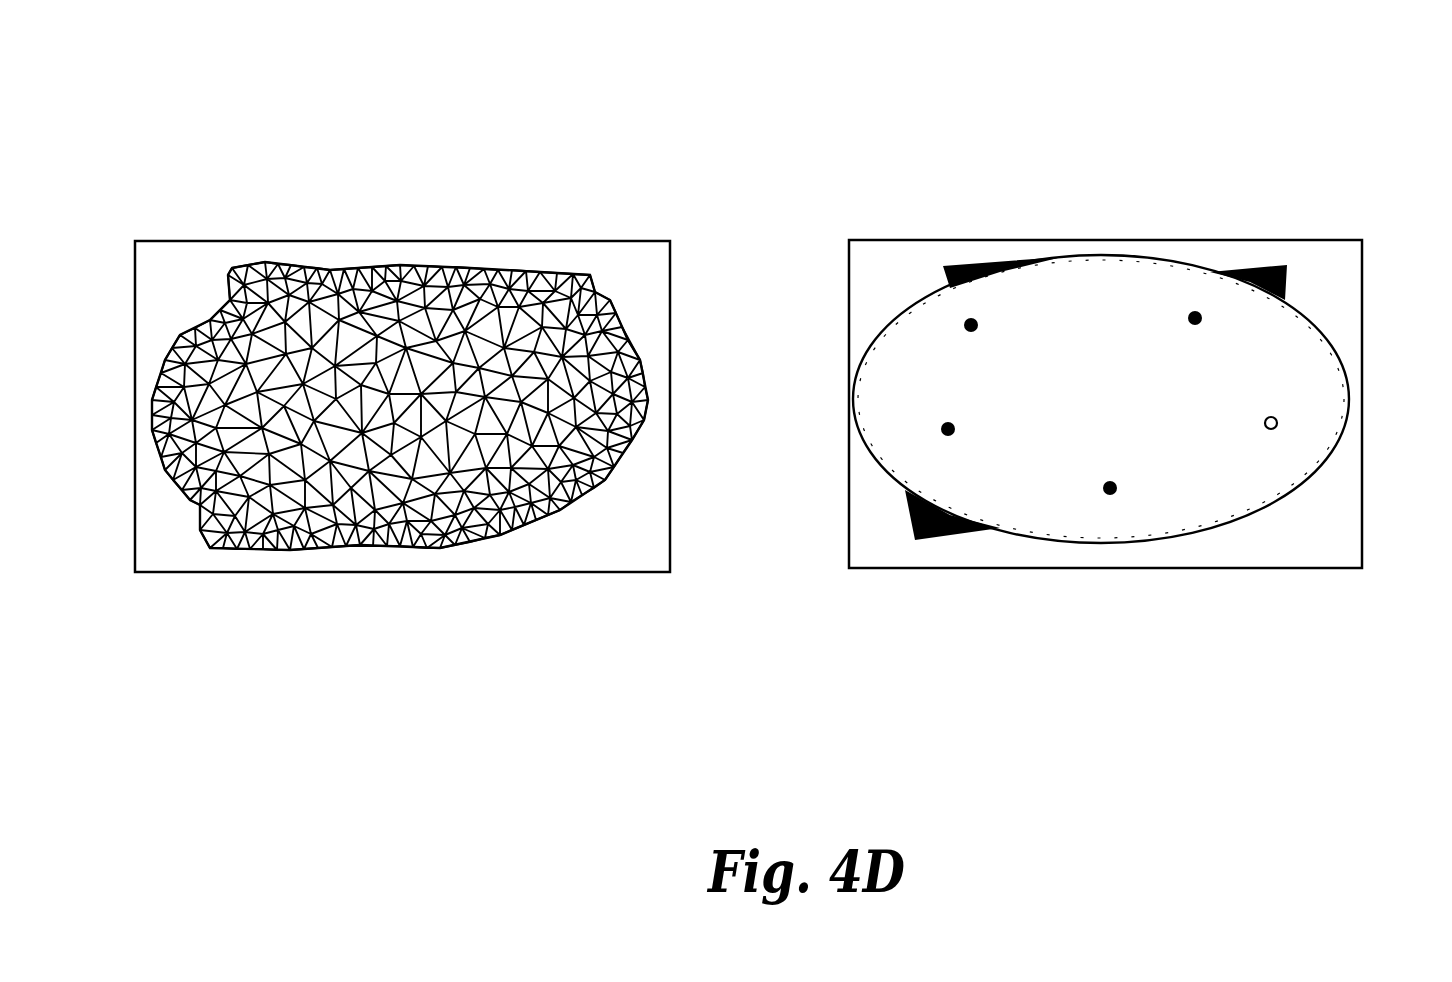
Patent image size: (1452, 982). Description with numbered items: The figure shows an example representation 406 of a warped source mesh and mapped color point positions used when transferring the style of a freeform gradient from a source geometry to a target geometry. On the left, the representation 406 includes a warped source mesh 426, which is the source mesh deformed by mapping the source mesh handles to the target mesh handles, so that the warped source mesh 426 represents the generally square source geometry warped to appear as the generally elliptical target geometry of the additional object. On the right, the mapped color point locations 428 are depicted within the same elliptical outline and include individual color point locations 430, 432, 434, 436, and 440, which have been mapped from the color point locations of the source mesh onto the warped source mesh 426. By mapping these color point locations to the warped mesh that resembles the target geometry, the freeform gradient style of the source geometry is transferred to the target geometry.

The representation 406 is at (186, 78).
The warped source mesh 426 is at (190, 240).
The mapped color point locations 428 is at (905, 240).
The color point location 430 is at (1198, 316).
The color point location 432 is at (1275, 428).
The color point location 434 is at (1106, 497).
The color point location 436 is at (943, 432).
The color point location 440 is at (965, 324).